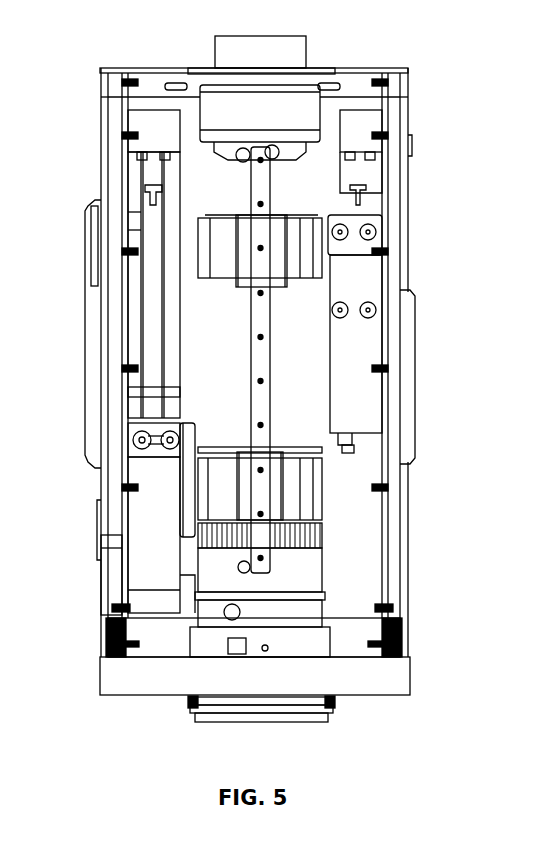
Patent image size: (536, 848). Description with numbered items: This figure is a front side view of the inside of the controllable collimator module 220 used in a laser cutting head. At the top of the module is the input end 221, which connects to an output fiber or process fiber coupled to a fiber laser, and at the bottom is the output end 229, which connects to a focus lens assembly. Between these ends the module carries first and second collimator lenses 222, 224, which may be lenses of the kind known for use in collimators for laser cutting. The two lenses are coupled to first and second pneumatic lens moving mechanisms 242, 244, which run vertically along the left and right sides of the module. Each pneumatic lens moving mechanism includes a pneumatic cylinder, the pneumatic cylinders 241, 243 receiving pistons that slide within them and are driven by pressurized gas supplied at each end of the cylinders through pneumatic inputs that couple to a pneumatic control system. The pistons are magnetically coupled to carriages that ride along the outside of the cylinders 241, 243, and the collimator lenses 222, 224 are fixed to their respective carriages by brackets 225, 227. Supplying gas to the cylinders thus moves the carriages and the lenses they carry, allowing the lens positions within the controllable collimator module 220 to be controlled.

The controllable collimator module 220 is at (430, 67).
The input end 221 is at (306, 45).
The first collimator lens 222 is at (282, 292).
The second collimator lens 224 is at (291, 438).
The bracket 225 is at (193, 420).
The bracket 227 is at (328, 216).
The output end 229 is at (322, 712).
The pneumatic cylinder 241 is at (158, 297).
The first pneumatic lens moving mechanism 242 is at (129, 322).
The pneumatic cylinder 243 is at (378, 190).
The second pneumatic lens moving mechanism 244 is at (397, 390).